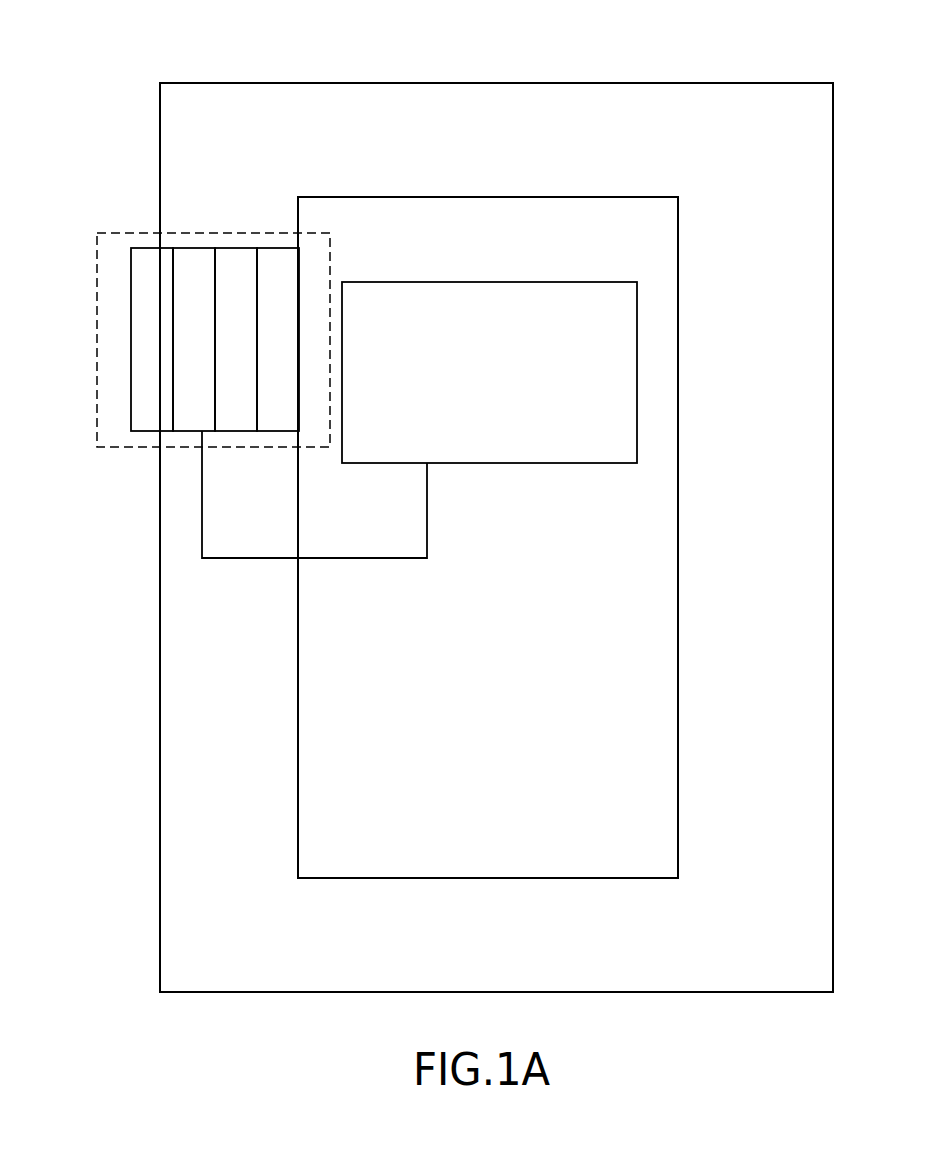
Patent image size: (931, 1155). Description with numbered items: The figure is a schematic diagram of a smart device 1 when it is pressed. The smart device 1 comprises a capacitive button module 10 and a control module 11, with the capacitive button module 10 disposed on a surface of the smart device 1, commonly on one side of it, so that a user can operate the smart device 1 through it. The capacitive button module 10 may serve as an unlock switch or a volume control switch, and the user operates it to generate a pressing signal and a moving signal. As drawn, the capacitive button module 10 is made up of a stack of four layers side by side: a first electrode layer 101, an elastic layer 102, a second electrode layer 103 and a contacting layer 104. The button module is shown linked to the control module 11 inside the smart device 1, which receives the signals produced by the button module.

The smart device 1 is at (463, 83).
The capacitive button module 10 is at (182, 279).
The first electrode layer 101 is at (278, 248).
The elastic layer 102 is at (235, 248).
The second electrode layer 103 is at (178, 248).
The contacting layer 104 is at (142, 248).
The control module 11 is at (542, 463).